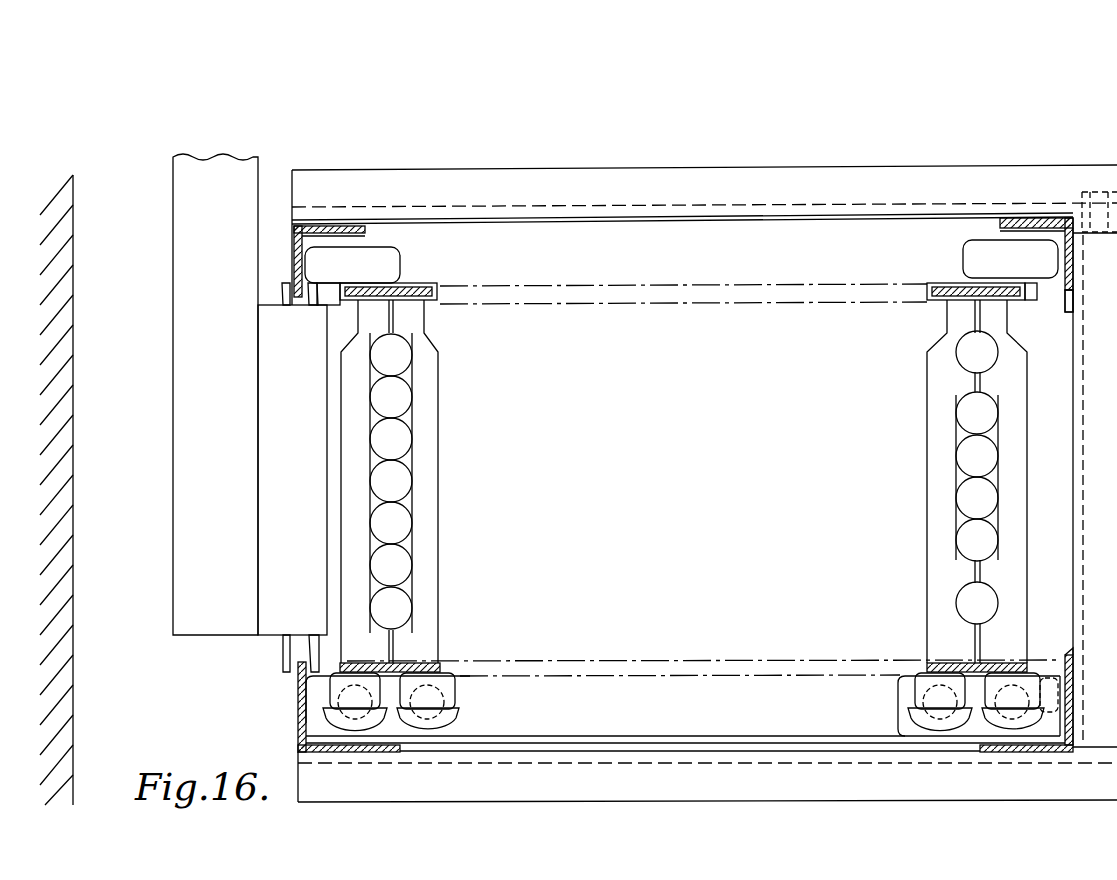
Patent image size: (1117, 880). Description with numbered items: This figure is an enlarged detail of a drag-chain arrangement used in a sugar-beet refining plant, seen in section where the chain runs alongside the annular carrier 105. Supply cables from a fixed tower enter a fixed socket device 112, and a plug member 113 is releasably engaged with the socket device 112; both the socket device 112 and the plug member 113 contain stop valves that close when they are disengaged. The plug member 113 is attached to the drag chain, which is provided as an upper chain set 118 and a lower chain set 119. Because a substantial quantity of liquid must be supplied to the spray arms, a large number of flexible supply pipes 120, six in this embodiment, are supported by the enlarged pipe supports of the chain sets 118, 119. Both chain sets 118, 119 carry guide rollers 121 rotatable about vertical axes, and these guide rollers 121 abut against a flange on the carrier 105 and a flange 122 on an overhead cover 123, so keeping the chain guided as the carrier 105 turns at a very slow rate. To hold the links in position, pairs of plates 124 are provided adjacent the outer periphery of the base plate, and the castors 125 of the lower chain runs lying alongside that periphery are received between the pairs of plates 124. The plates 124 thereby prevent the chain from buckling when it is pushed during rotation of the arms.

The annular carrier 105 is at (925, 737).
The fixed socket device 112 is at (193, 623).
The plug member 113 is at (287, 613).
The upper chain set 118 is at (940, 286).
The lower chain set 119 is at (826, 672).
The flexible supply pipes 120 is at (982, 456).
The guide rollers 121 is at (1013, 245).
The flange 122 is at (1064, 288).
The overhead cover 123 is at (746, 178).
The pairs of plates 124 is at (920, 712).
The castors 125 is at (935, 683).